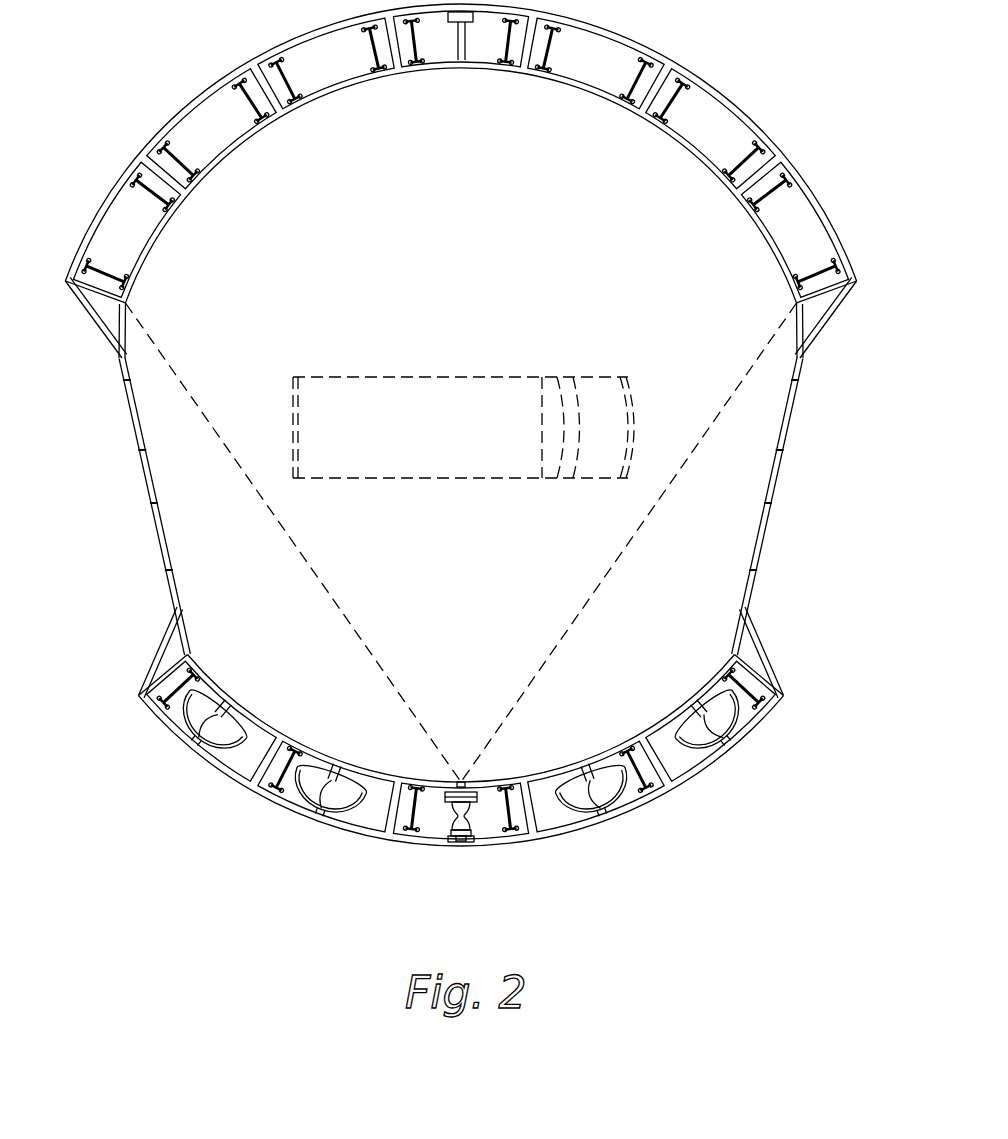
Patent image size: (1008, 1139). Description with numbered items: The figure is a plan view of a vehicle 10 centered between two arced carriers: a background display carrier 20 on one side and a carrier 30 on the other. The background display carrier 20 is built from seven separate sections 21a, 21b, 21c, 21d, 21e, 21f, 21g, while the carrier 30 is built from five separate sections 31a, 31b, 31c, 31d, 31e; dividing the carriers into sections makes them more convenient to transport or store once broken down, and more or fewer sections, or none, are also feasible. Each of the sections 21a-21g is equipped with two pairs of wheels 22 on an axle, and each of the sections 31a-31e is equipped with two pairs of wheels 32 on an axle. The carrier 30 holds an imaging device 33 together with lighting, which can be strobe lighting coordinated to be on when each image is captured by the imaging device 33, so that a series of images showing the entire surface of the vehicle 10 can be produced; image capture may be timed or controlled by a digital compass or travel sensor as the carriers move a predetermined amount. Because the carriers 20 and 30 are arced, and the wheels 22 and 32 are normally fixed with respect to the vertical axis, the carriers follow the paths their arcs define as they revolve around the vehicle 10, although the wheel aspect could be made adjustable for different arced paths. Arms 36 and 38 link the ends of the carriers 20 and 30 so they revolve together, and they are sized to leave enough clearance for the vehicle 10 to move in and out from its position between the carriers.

The vehicle 10 is at (455, 377).
The background display carrier 20 is at (741, 102).
The section 21a is at (143, 263).
The section 21b is at (225, 156).
The section 21c is at (338, 92).
The section 21d is at (446, 70).
The section 21e is at (593, 78).
The section 21f is at (700, 156).
The section 21g is at (779, 263).
The wheels 22 is at (635, 77).
The carrier 30 is at (585, 838).
The section 31a is at (190, 718).
The section 31b is at (312, 800).
The section 31c is at (460, 814).
The section 31d is at (614, 783).
The section 31e is at (732, 718).
The wheels 32 is at (372, 812).
The imaging device 33 is at (461, 782).
The arm 36 is at (776, 487).
The arm 38 is at (147, 487).